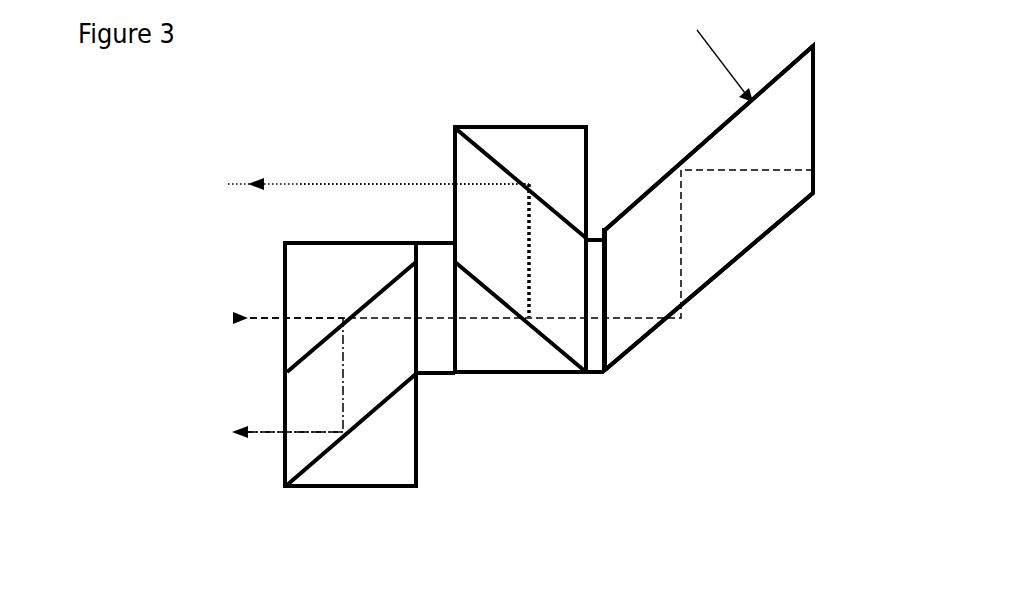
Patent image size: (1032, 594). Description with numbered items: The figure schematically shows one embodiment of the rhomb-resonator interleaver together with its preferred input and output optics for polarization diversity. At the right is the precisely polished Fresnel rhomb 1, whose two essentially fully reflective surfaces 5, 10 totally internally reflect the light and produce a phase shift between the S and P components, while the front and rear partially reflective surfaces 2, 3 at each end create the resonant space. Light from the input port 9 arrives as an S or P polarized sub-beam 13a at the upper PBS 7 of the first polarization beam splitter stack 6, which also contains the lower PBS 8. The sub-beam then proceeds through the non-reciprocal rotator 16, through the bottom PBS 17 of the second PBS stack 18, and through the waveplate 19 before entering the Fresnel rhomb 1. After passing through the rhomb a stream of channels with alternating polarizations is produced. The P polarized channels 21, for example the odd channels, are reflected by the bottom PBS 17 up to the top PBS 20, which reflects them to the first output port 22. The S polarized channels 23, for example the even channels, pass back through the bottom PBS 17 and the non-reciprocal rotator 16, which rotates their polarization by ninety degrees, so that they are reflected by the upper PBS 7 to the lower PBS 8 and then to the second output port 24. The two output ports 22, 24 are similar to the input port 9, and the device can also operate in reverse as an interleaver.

The Fresnel rhomb 1 is at (714, 52).
The front partially reflective surface 2 is at (607, 323).
The rear partially reflective surface 3 is at (817, 110).
The fully reflective surface 5 is at (737, 265).
The first polarization beam splitter stack 6 is at (327, 525).
The upper PBS 7 is at (323, 282).
The lower PBS 8 is at (400, 467).
The input port 9 is at (233, 318).
The fully reflective surface 10 is at (713, 130).
The sub-beam 13a is at (265, 318).
The non-reciprocal rotator 16 is at (437, 354).
The bottom PBS 17 is at (530, 354).
The PBS stack 18 is at (562, 96).
The waveplate 19 is at (605, 377).
The top PBS 20 is at (510, 145).
The P polarized channels 21 is at (360, 183).
The first output port 22 is at (228, 183).
The S polarized channels 23 is at (265, 433).
The second output port 24 is at (234, 432).